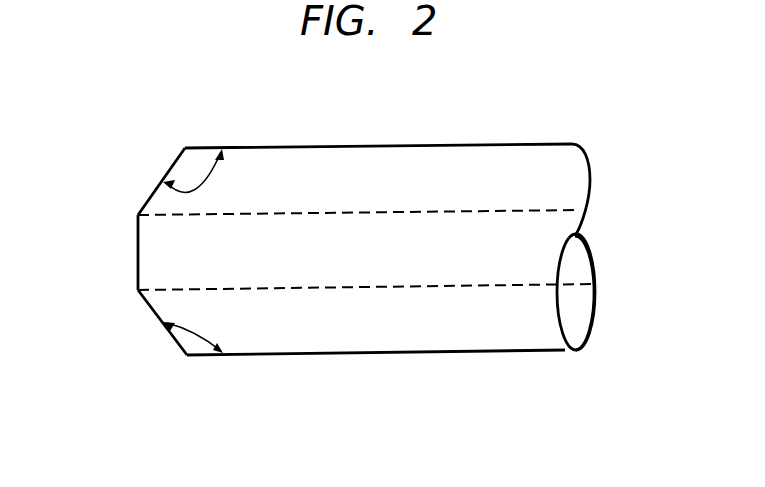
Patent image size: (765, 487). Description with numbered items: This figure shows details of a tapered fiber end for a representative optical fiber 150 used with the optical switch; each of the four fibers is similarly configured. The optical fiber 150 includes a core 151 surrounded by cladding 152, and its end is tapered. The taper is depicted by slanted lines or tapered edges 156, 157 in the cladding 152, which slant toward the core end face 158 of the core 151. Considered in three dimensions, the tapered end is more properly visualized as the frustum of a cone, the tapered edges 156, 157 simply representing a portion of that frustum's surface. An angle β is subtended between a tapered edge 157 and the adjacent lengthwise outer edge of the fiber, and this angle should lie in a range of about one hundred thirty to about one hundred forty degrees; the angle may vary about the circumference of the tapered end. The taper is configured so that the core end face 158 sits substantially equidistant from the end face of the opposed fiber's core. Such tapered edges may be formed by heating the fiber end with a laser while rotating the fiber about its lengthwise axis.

The optical fiber 150 is at (508, 144).
The core 151 is at (578, 264).
The cladding 152 is at (578, 316).
The tapered edge 156 is at (163, 323).
The tapered edge 157 is at (163, 182).
The core end face 158 is at (138, 252).